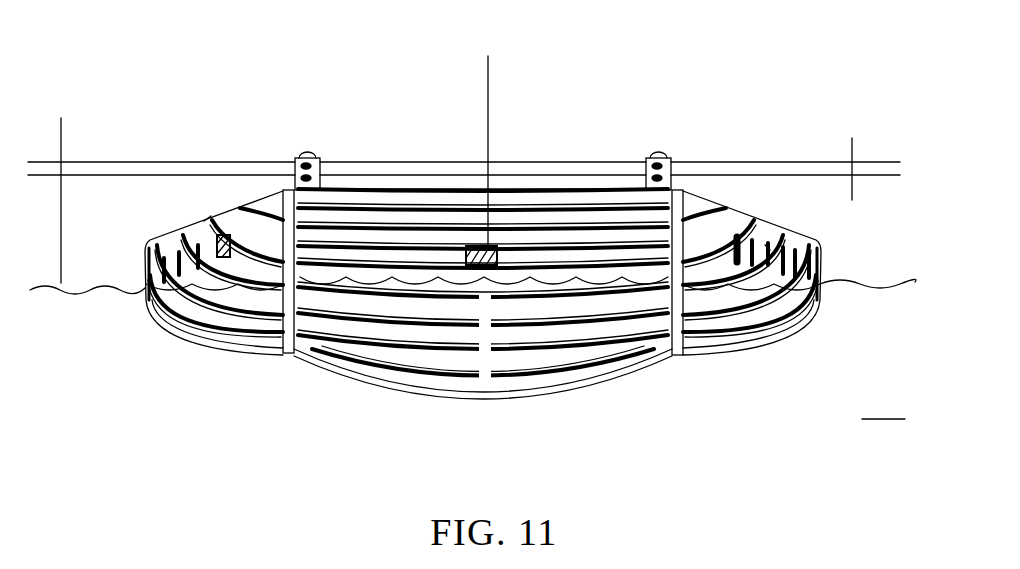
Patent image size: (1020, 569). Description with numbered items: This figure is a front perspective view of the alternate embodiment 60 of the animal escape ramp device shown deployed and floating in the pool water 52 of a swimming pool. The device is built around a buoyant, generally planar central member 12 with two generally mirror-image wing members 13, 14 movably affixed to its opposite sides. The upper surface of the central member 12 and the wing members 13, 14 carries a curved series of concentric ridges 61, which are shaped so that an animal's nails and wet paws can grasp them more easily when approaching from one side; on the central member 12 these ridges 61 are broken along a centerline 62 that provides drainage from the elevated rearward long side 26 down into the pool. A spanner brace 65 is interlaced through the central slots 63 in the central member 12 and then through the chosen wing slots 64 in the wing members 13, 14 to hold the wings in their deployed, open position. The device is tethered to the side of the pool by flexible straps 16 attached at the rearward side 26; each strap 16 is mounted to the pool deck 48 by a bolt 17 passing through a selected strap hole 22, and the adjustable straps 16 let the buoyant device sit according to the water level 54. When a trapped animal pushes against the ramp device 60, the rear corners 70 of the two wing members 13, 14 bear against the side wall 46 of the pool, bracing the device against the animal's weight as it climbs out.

The central member 12 is at (401, 266).
The wing member 13 is at (204, 352).
The wing member 14 is at (789, 341).
The flexible strap 16 is at (296, 166).
The bolt 17 is at (308, 152).
The strap hole 22 is at (313, 158).
The rearward long side 26 is at (447, 188).
The side wall 46 is at (850, 157).
The deck 48 is at (163, 161).
The pool water 52 is at (473, 349).
The water level 54 is at (61, 189).
The alternate embodiment of the ramp device 60 is at (658, 373).
The curved concentric ridges 61 is at (570, 373).
The centerline 62 is at (483, 380).
The central slot 63 is at (500, 246).
The wing slot 64 is at (211, 216).
The spanner brace 65 is at (488, 138).
The rear corner 70 is at (148, 240).